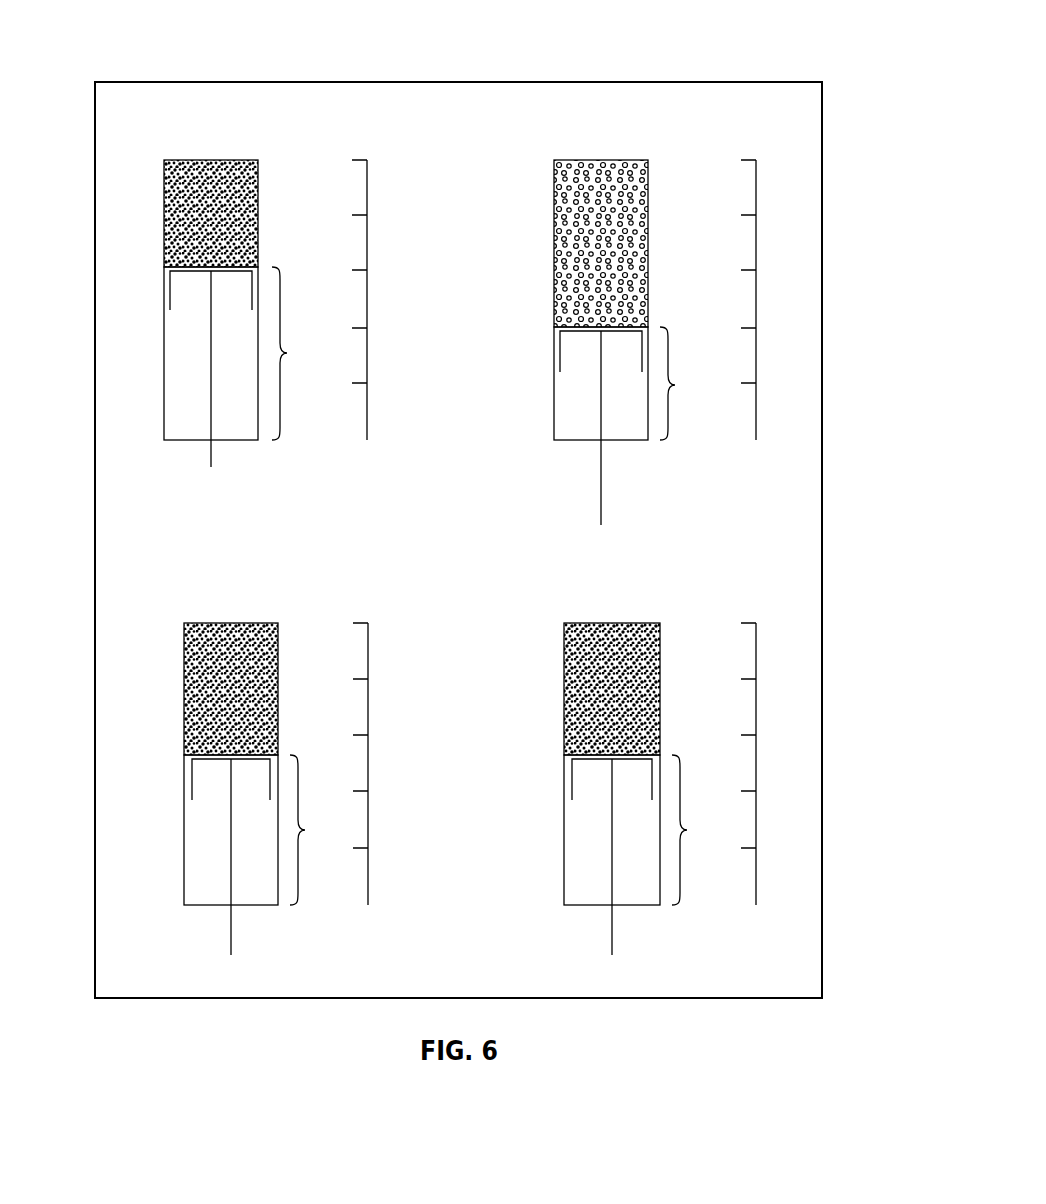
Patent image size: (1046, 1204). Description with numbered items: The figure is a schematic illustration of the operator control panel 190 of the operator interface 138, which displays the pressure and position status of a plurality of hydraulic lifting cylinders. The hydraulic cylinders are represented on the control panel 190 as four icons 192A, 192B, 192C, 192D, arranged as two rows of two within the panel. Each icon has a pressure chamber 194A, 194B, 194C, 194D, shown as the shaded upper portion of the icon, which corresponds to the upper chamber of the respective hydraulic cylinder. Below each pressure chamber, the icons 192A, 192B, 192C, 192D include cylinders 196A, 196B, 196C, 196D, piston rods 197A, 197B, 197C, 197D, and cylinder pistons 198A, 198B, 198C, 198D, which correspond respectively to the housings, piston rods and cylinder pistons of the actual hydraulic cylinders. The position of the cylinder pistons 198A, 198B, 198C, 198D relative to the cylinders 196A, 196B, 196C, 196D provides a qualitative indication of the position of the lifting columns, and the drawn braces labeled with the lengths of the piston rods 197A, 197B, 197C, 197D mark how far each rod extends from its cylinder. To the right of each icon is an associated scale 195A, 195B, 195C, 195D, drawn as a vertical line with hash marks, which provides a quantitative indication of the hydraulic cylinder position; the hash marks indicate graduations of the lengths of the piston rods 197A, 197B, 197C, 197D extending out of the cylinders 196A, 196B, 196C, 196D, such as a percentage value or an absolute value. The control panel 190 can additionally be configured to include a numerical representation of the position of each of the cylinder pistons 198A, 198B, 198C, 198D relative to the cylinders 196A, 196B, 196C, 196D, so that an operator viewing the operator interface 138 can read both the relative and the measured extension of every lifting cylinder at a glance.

The operator interface 138 is at (790, 43).
The operator control panel 190 is at (822, 266).
The icon 192A is at (224, 136).
The icon 192B is at (619, 134).
The icon 192C is at (242, 602).
The icon 192D is at (620, 608).
The pressure chamber 194A is at (182, 172).
The pressure chamber 194B is at (578, 178).
The pressure chamber 194C is at (208, 634).
The pressure chamber 194D is at (582, 634).
The scale 195A is at (368, 197).
The scale 195B is at (756, 192).
The scale 195C is at (368, 660).
The scale 195D is at (756, 650).
The cylinder 196A is at (164, 355).
The cylinder 196B is at (554, 410).
The cylinder 196C is at (184, 848).
The cylinder 196D is at (564, 850).
The piston rod 197A is at (211, 463).
The piston rod 197B is at (601, 487).
The piston rod 197C is at (231, 934).
The piston rod 197D is at (612, 930).
The cylinder piston 198A is at (180, 274).
The cylinder piston 198B is at (585, 334).
The cylinder piston 198C is at (210, 762).
The cylinder piston 198D is at (590, 762).